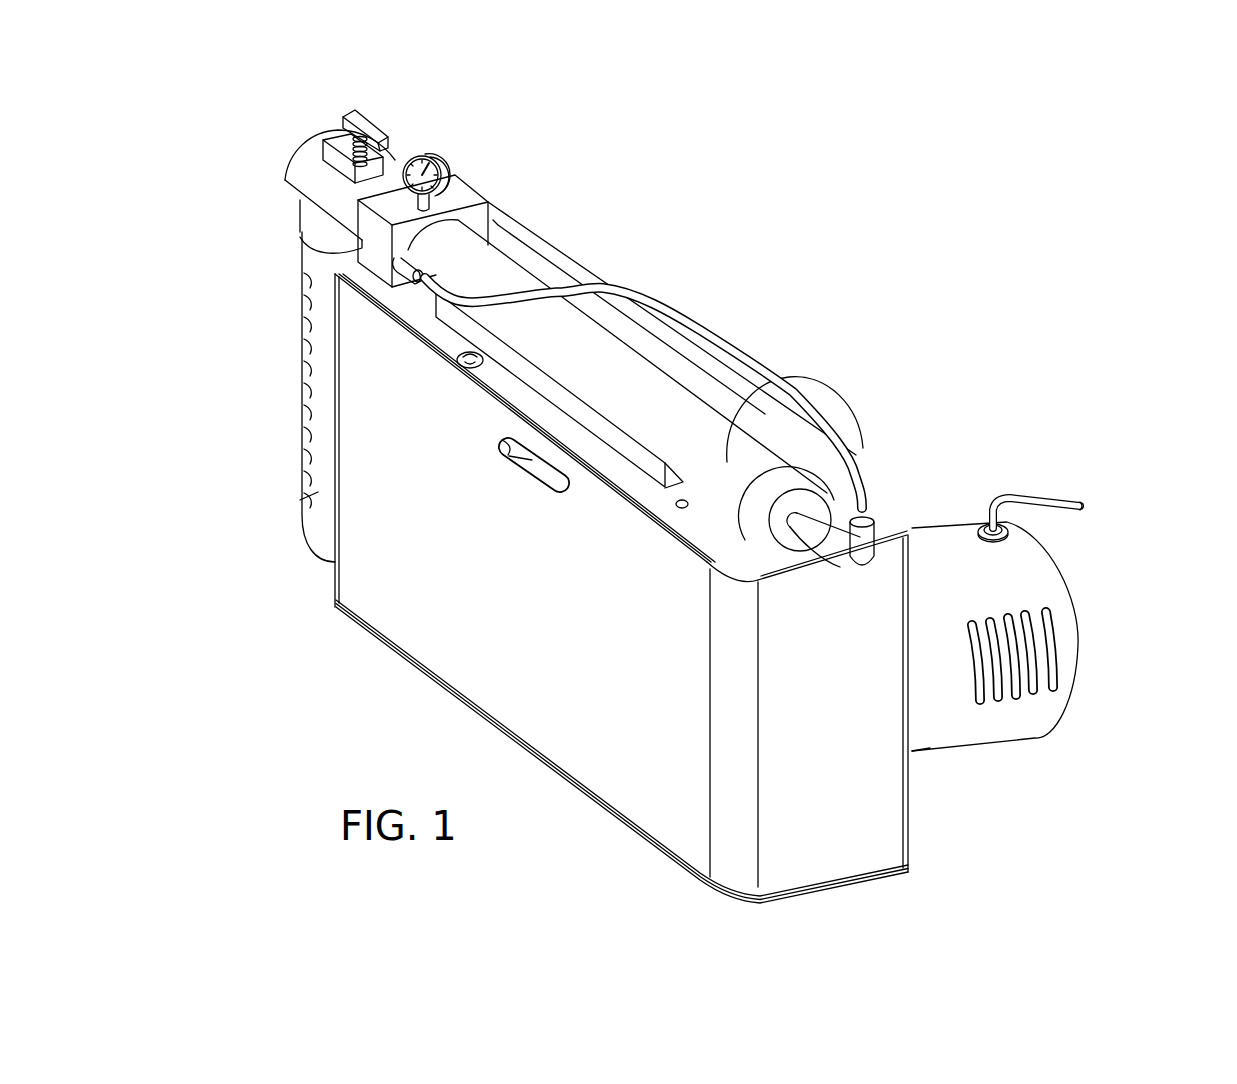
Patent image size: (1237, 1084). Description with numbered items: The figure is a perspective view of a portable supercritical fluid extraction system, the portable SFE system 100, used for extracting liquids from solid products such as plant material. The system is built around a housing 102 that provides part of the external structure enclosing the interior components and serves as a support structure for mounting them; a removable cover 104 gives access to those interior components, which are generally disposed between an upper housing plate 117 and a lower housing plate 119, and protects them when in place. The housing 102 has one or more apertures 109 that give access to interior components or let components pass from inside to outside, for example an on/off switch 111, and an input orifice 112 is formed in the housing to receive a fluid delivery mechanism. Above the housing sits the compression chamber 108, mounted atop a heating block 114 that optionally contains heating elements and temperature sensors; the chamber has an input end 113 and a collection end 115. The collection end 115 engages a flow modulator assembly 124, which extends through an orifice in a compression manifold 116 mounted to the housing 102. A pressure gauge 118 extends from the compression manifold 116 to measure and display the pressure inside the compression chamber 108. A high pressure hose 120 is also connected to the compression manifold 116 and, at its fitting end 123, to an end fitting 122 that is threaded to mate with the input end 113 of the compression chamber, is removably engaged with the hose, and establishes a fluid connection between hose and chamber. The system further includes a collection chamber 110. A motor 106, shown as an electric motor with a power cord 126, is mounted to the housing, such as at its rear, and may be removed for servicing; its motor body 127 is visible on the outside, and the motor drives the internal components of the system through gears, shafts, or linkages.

The portable SFE system 100 is at (312, 692).
The housing 102 is at (362, 253).
The cover 104 is at (843, 857).
The motor 106 is at (1030, 720).
The compression chamber 108 is at (503, 287).
The apertures 109 is at (537, 458).
The collection chamber 110 is at (320, 507).
The on/off switch 111 is at (506, 445).
The input orifice 112 is at (423, 336).
The input end 113 is at (762, 398).
The heating block 114 is at (600, 490).
The collection end 115 is at (450, 237).
The compression manifold 116 is at (457, 197).
The upper housing plate 117 is at (713, 447).
The pressure gauge 118 is at (430, 165).
The lower housing plate 119 is at (618, 835).
The high pressure hose 120 is at (703, 333).
The end fitting 122 is at (783, 482).
The fitting end 123 is at (862, 500).
The flow modulator assembly 124 is at (312, 110).
The power cord 126 is at (1037, 503).
The motor body 127 is at (957, 720).